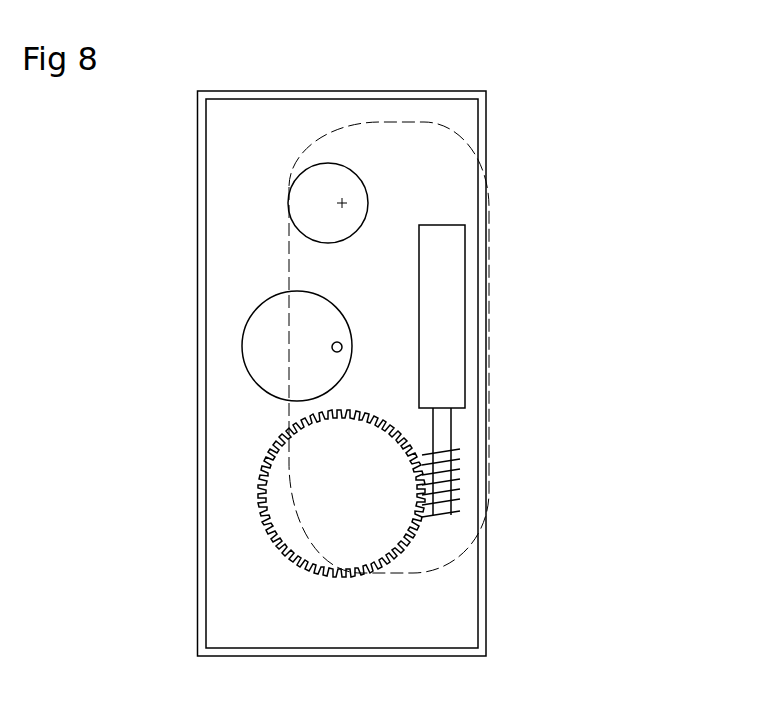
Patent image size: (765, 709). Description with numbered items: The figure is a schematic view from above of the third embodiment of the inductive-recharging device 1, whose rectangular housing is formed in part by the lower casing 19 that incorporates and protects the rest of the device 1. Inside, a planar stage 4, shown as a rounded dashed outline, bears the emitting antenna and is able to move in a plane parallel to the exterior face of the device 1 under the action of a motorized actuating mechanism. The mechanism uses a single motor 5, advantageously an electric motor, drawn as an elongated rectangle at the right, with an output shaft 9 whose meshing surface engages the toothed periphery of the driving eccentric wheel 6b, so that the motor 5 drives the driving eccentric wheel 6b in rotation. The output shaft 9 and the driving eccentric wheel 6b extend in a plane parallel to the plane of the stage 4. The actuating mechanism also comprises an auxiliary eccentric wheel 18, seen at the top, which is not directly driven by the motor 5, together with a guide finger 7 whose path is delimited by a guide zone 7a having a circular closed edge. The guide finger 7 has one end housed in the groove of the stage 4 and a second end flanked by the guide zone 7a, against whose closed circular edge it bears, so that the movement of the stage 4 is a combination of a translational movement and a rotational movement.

The device for inductive recharging 1 is at (162, 303).
The lower casing 19 is at (238, 227).
The stage 4 is at (465, 143).
The auxiliary eccentric wheel 18 is at (312, 192).
The guide zone 7a is at (253, 363).
The guide finger 7 is at (340, 343).
The motor 5 is at (452, 282).
The output shaft 9 is at (443, 478).
The driving eccentric wheel 6b is at (273, 530).